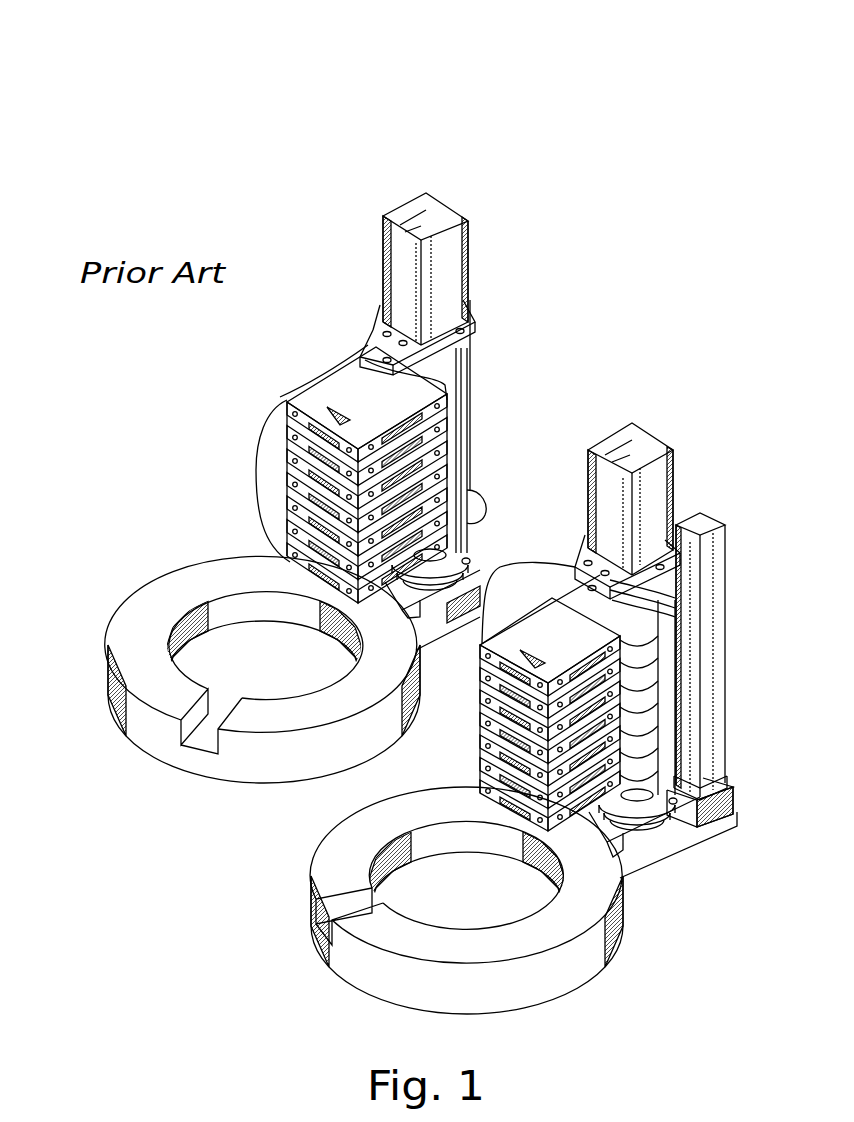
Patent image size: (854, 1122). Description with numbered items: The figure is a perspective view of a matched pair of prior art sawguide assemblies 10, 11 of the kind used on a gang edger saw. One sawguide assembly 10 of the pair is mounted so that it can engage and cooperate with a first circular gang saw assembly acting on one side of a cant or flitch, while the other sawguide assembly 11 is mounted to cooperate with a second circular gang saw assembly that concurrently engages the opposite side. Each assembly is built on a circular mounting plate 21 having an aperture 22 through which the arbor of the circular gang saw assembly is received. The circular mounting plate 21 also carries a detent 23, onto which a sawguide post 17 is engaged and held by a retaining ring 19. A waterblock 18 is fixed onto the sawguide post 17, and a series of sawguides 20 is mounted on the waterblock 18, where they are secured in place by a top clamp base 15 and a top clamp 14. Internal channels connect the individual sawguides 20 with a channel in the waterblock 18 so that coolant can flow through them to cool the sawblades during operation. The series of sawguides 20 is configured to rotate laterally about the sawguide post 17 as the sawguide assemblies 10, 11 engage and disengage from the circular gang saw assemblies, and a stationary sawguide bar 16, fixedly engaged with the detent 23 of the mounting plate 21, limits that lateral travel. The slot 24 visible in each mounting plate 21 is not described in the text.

The sawguide assembly 10 is at (514, 156).
The sawguide assembly 11 is at (658, 393).
The top clamp 14 is at (383, 262).
The top clamp base 15 is at (470, 297).
The stationary sawguide bar 16 is at (468, 374).
The sawguide post 17 is at (465, 563).
The waterblock 18 is at (478, 488).
The retaining ring 19 is at (470, 560).
The sawguides 20 is at (287, 543).
The circular mounting plate 21 is at (195, 560).
The aperture 22 is at (252, 646).
The detent 23 is at (474, 628).
The slot 24 is at (205, 733).